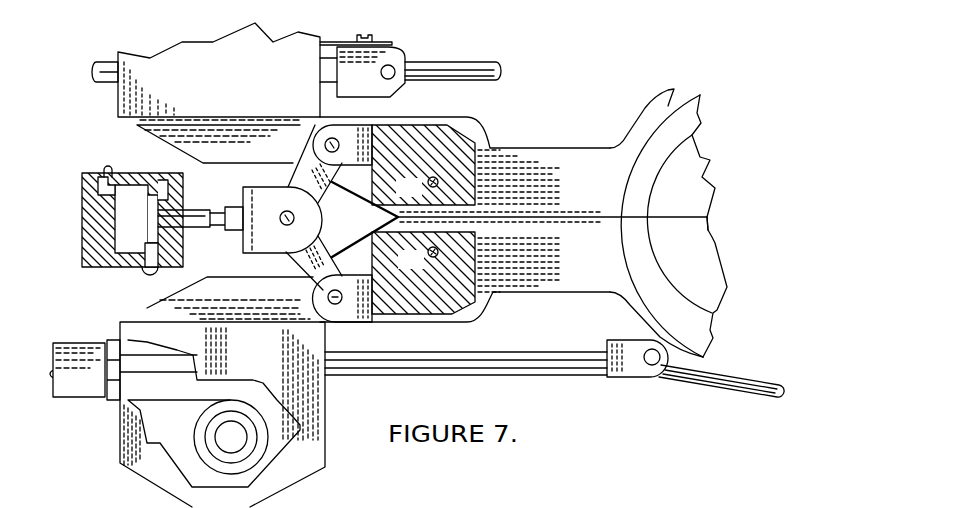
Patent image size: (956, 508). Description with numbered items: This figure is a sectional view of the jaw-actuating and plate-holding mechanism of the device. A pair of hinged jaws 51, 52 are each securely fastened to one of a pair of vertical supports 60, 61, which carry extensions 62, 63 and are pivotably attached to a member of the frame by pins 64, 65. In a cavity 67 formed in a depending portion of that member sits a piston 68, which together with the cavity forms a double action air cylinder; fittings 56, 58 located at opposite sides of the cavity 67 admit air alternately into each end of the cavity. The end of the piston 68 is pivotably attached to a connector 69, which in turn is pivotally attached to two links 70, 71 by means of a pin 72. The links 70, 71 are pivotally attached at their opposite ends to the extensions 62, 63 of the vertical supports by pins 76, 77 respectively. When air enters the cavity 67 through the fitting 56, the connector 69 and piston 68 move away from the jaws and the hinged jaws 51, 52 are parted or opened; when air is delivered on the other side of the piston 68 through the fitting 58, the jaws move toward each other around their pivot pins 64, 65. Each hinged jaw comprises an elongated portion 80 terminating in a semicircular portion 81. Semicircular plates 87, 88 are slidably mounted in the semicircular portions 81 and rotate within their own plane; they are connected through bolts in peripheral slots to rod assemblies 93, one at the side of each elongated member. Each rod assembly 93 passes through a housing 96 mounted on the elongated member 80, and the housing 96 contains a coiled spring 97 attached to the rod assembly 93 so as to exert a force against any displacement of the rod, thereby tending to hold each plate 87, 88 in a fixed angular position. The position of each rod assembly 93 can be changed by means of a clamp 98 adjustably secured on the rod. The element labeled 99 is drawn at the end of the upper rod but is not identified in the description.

The hinged jaw 51 is at (560, 251).
The hinged jaw 52 is at (561, 181).
The fitting 56 is at (152, 278).
The fitting 58 is at (115, 147).
The vertical support 60 is at (402, 310).
The vertical support 61 is at (443, 128).
The extension 62 is at (335, 313).
The extension 63 is at (347, 128).
The pin 64 is at (428, 254).
The pin 65 is at (428, 182).
The cavity 67 is at (139, 232).
The piston 68 is at (170, 173).
The connector 69 is at (255, 233).
The link 70 is at (326, 250).
The link 71 is at (297, 174).
The pin 72 is at (295, 218).
The pin 76 is at (328, 297).
The pin 77 is at (324, 143).
The elongated portion 80 is at (487, 147).
The semicircular portion 81 is at (660, 110).
The semicircular plate 87 is at (700, 262).
The semicircular plate 88 is at (690, 188).
The rod assembly 93 is at (502, 33).
The housing 96 is at (247, 87).
The coiled spring 97 is at (199, 425).
The clamp 98 is at (394, 64).
The nozzle 99 is at (105, 66).